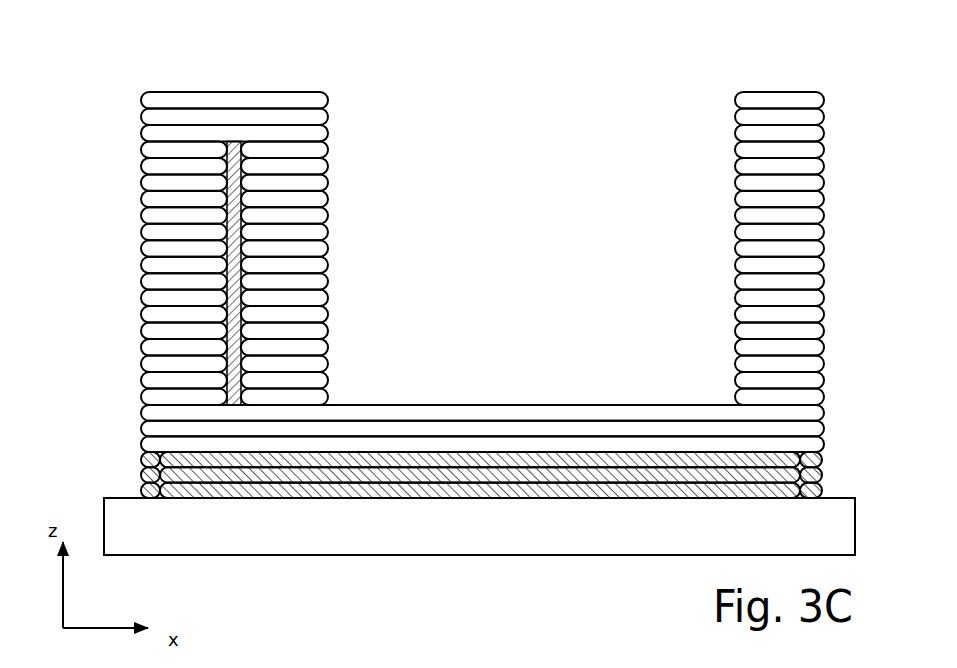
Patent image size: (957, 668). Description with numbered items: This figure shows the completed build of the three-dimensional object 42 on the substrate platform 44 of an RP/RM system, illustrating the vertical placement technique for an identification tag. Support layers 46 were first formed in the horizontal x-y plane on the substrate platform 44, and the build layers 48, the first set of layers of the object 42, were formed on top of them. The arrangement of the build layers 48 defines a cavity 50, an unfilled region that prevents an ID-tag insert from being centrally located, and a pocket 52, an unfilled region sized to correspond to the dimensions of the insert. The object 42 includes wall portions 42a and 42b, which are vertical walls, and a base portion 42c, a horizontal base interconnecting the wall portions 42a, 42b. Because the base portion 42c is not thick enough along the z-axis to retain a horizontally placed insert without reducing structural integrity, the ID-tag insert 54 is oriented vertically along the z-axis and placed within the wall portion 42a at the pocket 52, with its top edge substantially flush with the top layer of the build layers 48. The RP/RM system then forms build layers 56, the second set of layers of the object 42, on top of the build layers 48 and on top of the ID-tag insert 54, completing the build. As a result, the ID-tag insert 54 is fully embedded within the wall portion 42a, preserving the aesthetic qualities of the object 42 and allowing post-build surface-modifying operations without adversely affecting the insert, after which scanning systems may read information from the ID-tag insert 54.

The 3D object 42 is at (126, 42).
The wall portion 42a is at (334, 278).
The wall portion 42b is at (731, 197).
The base portion 42c is at (515, 398).
The substrate platform 44 is at (452, 543).
The support layers 46 is at (97, 452).
The build layers 48 is at (97, 149).
The cavity 50 is at (531, 149).
The pocket 52 is at (250, 201).
The ID-tag insert 54 is at (243, 241).
The build layers 56 is at (97, 102).